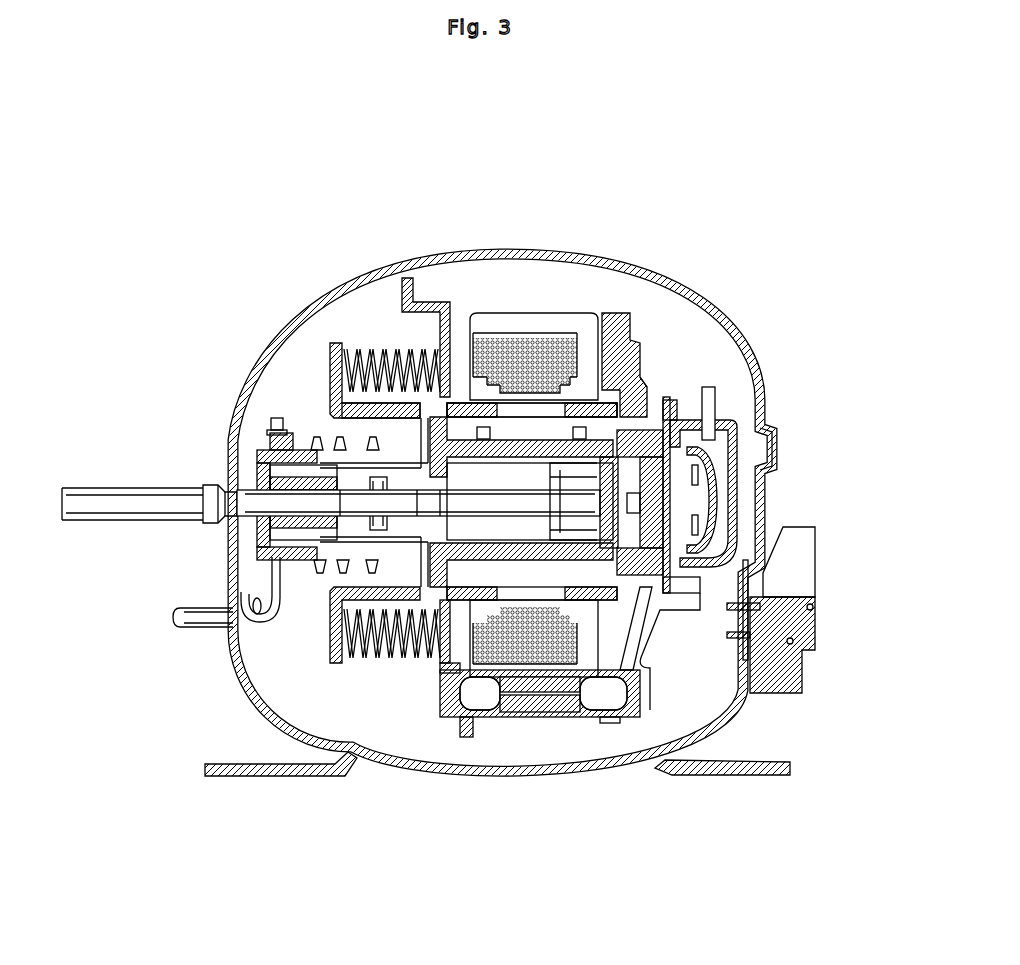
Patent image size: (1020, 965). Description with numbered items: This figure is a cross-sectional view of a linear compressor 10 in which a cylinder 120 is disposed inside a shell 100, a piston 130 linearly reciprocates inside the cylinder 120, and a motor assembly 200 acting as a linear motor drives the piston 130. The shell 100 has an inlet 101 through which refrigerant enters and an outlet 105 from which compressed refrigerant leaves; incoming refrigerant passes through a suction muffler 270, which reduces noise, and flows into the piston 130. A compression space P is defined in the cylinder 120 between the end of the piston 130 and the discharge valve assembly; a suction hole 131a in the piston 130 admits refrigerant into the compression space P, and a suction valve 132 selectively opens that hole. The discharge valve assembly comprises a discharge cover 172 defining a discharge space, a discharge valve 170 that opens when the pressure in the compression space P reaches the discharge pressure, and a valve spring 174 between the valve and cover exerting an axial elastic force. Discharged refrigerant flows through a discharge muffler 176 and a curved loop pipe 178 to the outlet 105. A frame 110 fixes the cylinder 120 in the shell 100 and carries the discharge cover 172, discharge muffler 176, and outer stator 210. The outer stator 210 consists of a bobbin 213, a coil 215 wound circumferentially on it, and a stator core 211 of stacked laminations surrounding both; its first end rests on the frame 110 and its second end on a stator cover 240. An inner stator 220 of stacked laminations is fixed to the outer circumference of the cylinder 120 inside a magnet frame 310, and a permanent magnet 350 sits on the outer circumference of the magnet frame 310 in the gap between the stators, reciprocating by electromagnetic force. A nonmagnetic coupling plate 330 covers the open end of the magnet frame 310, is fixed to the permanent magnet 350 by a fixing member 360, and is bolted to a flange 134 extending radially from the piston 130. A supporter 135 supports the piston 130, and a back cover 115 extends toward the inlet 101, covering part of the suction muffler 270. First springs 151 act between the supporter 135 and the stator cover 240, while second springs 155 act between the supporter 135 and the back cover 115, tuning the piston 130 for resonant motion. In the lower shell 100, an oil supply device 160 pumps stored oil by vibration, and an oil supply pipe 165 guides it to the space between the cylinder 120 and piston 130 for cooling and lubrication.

The linear compressor 10 is at (582, 222).
The shell 100 is at (696, 302).
The inlet 101 is at (155, 489).
The outlet 105 is at (180, 618).
The frame 110 is at (567, 408).
The back cover 115 is at (270, 452).
The cylinder 120 is at (672, 446).
The piston 130 is at (642, 478).
The suction hole 131a is at (560, 714).
The suction valve 132 is at (627, 640).
The flange 134 is at (322, 464).
The supporter 135 is at (330, 358).
The first springs 151 is at (372, 356).
The second springs 155 is at (333, 590).
The oil supply device 160 is at (600, 724).
The oil supply pipe 165 is at (600, 560).
The discharge valve 170 is at (765, 560).
The discharge cover 172 is at (710, 517).
The valve spring 174 is at (668, 456).
The discharge muffler 176 is at (736, 425).
The loop pipe 178 is at (712, 405).
The motor assembly 200 is at (628, 297).
The outer stator 210 is at (580, 308).
The stator core 211 is at (605, 330).
The bobbin 213 is at (640, 383).
The coil 215 is at (529, 372).
The inner stator 220 is at (510, 715).
The stator cover 240 is at (416, 292).
The suction muffler 270 is at (366, 558).
The magnet frame 310 is at (770, 440).
The coupling plate 330 is at (380, 410).
The permanent magnet 350 is at (517, 440).
The fixing member 360 is at (527, 693).
The compression space P is at (815, 604).